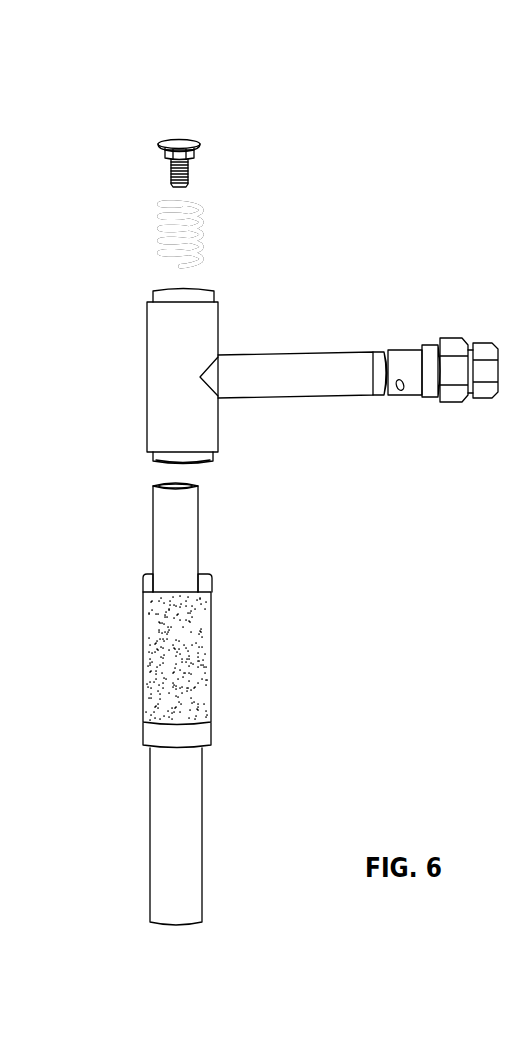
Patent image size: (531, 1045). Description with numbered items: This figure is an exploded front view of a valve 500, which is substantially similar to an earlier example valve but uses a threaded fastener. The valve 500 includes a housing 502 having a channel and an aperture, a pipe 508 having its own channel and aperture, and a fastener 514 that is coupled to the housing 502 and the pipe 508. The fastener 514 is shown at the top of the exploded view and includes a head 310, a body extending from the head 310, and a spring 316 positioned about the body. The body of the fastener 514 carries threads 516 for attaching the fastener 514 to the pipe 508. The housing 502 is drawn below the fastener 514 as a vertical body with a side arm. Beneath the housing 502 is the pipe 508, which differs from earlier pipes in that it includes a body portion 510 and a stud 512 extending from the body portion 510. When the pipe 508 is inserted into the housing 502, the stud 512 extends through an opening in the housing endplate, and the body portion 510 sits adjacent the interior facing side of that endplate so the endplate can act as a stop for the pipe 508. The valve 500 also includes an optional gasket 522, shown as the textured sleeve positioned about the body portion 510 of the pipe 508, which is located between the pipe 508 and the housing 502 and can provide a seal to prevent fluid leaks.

The valve 500 is at (322, 103).
The fastener 514 is at (222, 158).
The head 310 is at (175, 138).
The threads 516 is at (169, 172).
The spring 316 is at (205, 222).
The housing 502 is at (210, 313).
The pipe 508 is at (238, 665).
The stud 512 is at (190, 520).
The gasket 522 is at (152, 652).
The body portion 510 is at (193, 795).